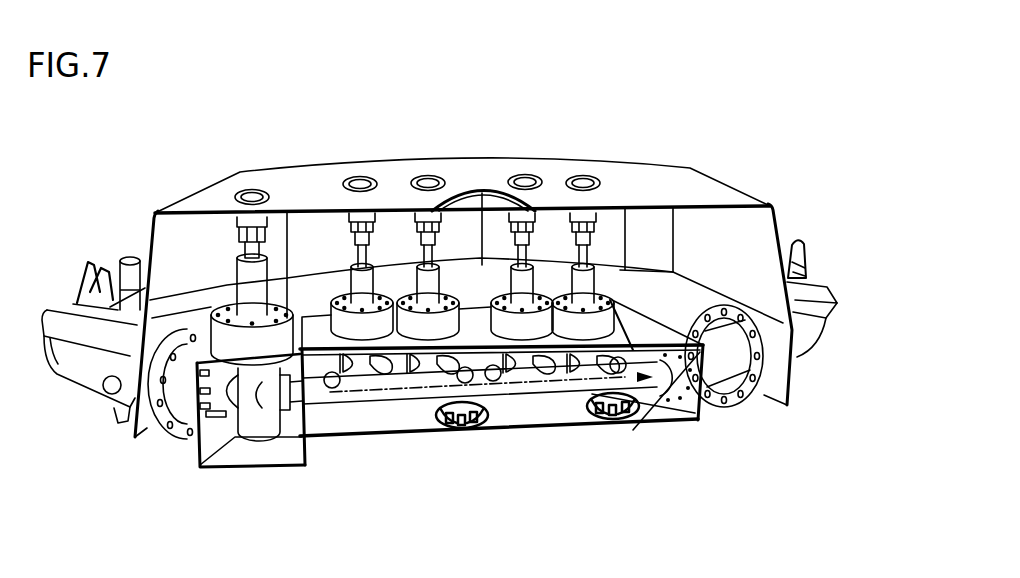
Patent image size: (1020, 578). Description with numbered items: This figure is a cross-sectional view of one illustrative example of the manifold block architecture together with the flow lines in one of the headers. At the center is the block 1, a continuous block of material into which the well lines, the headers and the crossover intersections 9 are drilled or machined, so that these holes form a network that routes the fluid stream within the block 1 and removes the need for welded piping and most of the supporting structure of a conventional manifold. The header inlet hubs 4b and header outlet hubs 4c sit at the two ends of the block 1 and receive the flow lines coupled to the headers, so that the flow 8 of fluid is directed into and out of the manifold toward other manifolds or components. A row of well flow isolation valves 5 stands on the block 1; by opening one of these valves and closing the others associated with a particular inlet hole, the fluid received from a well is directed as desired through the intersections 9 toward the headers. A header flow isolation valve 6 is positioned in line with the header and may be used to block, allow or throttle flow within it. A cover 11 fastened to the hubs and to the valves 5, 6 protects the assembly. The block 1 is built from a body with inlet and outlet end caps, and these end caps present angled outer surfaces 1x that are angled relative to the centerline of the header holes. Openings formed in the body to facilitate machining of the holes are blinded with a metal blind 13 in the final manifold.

The block 1 is at (331, 460).
The angled outer surfaces 1x is at (197, 453).
The header inlet hubs 4b is at (74, 262).
The header outlet hubs 4c is at (803, 236).
The well flow isolation valves 5 is at (572, 250).
The header flow isolation valves 6 is at (248, 258).
The flow 8 is at (313, 393).
The intersections 9 is at (616, 374).
The cover 11 is at (703, 173).
The metal blind 13 is at (623, 423).